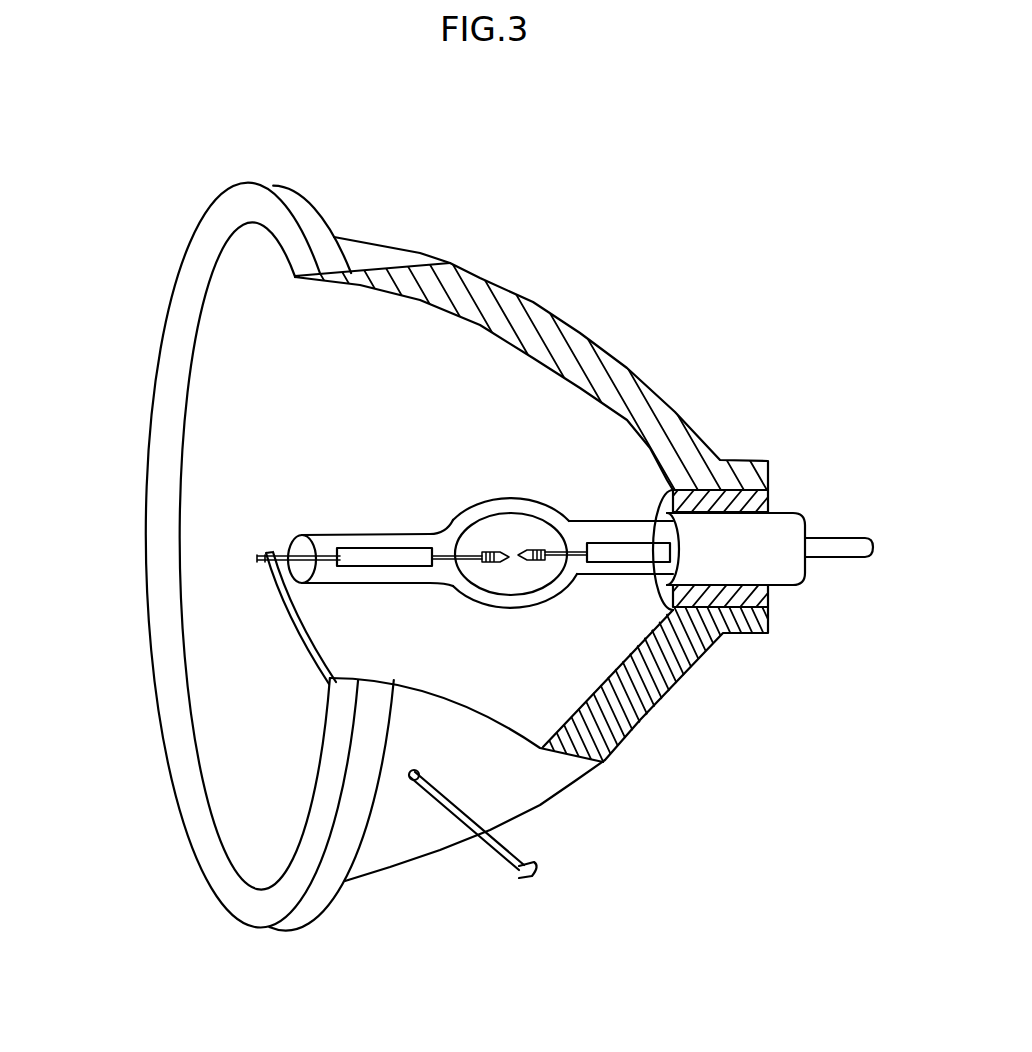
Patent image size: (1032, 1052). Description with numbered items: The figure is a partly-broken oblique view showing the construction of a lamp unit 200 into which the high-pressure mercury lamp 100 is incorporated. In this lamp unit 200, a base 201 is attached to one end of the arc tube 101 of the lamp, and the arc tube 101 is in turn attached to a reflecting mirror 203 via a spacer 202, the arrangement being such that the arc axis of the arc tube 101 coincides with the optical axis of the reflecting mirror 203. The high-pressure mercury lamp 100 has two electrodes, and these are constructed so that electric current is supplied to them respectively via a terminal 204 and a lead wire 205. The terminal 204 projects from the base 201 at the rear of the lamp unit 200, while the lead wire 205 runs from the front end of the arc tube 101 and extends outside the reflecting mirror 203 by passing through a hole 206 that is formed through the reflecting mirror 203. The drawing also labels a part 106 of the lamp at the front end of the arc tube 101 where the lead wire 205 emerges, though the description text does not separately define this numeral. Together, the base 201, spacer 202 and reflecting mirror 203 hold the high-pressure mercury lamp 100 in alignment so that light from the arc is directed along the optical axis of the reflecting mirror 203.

The high-pressure mercury lamp 100 is at (480, 528).
The arc tube 101 is at (532, 505).
The external lead 106 is at (290, 535).
The lamp unit 200 is at (124, 433).
The base 201 is at (798, 588).
The spacer 202 is at (748, 497).
The reflecting mirror 203 is at (563, 338).
The terminal 204 is at (845, 531).
The lead wire 205 is at (535, 864).
The hole 206 is at (425, 774).